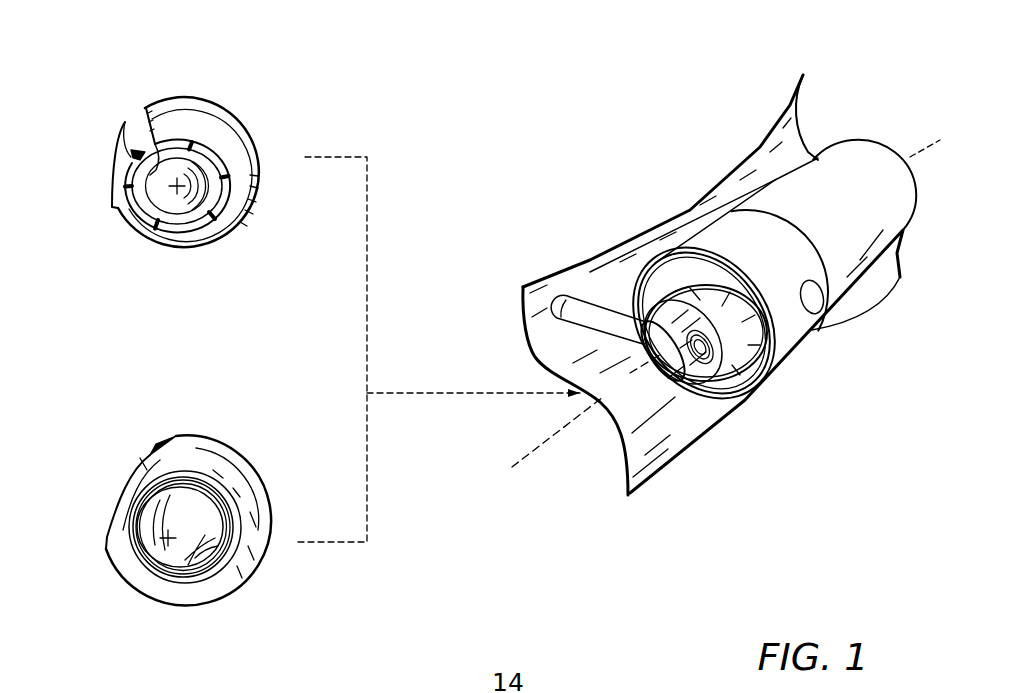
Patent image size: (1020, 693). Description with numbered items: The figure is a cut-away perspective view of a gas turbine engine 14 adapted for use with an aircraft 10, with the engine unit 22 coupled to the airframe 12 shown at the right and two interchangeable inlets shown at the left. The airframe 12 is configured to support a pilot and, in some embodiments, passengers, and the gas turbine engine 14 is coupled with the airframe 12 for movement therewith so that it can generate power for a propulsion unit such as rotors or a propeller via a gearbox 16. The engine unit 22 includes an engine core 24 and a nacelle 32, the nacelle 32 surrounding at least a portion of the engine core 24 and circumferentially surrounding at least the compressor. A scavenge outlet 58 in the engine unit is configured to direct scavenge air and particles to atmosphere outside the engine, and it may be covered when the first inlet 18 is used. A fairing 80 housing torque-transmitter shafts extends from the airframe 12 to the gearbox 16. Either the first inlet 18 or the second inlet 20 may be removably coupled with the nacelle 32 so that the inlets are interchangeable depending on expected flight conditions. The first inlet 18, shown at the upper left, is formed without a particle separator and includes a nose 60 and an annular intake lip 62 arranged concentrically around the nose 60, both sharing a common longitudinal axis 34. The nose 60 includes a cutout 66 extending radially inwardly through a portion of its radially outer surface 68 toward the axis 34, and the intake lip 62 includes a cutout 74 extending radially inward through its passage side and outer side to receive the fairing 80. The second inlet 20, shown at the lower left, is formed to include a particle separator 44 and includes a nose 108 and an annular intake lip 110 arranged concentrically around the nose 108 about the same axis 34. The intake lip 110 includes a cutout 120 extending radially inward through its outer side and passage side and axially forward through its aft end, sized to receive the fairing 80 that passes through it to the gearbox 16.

The aircraft 10 is at (627, 105).
The airframe 12 is at (807, 107).
The gas turbine engine 14 is at (853, 230).
The gearbox 16 is at (735, 368).
The first inlet 18 is at (215, 102).
The second inlet 20 is at (250, 448).
The engine unit 22 is at (742, 247).
The engine core 24 is at (769, 332).
The nacelle 32 is at (852, 163).
The longitudinal axis 34 is at (537, 447).
The particle separator 44 is at (213, 573).
The scavenge outlet 58 is at (830, 299).
The nose 60 is at (163, 193).
The intake lip 62 is at (218, 237).
The cutout 66 is at (150, 155).
The radially outer surface 68 is at (143, 178).
The cutout 74 is at (135, 110).
The fairing 80 is at (595, 302).
The nose 108 is at (175, 556).
The intake lip 110 is at (137, 580).
The cutout 120 is at (168, 433).